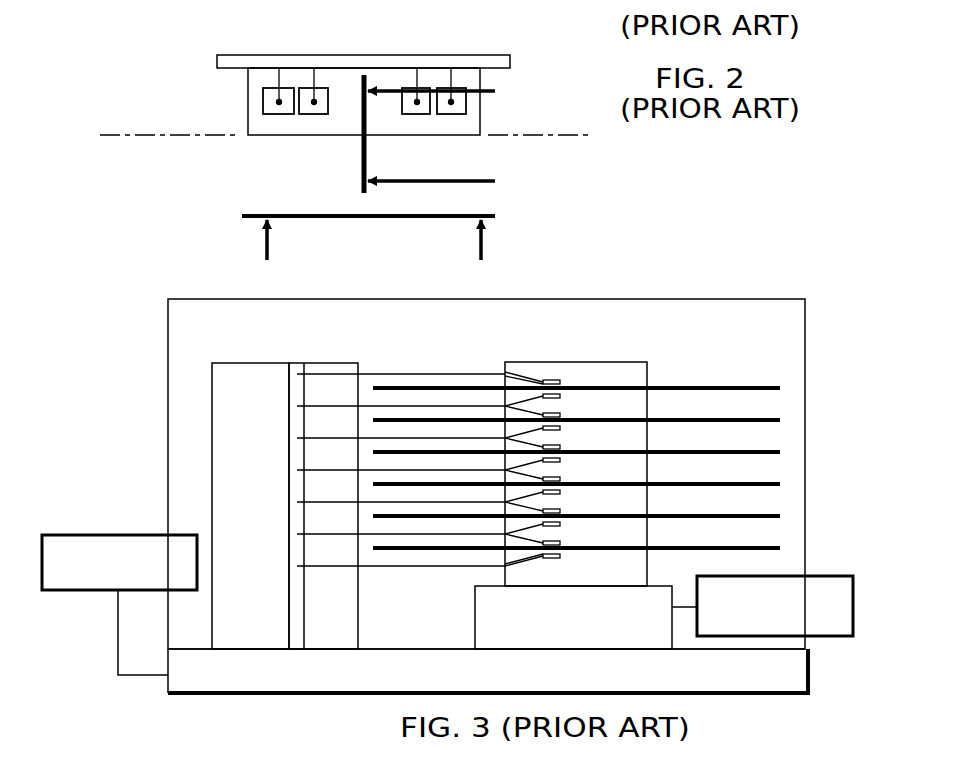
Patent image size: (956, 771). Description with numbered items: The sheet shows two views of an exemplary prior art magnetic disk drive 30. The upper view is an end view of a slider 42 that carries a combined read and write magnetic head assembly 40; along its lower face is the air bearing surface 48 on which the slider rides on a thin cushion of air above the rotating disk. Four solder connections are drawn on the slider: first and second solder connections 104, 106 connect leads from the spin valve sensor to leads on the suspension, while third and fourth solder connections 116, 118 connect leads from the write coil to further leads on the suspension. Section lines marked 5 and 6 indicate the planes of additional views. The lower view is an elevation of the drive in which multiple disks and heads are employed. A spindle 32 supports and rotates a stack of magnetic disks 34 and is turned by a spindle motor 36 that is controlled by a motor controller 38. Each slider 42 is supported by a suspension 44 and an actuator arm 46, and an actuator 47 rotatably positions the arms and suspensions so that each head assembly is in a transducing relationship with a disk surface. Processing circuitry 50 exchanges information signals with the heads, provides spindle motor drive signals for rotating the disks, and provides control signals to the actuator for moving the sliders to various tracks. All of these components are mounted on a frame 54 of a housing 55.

In FIG. 2, the first solder connection 104 is at (265, 89).
In FIG. 2, the third solder connection 116 is at (297, 89).
In FIG. 2, the fourth solder connection 118 is at (401, 89).
In FIG. 2, the second solder connection 106 is at (436, 89).
In FIG. 2, the slider 42 is at (248, 98).
In FIG. 3, the slider 42 is at (553, 410).
In FIG. 2, the magnetic head assembly 40 is at (372, 133).
In FIG. 2, the section line 6- 6 is at (444, 139).
In FIG. 2, the section line 5- 5 is at (368, 254).
In FIG. 2, the air bearing surface 48 is at (141, 137).
In FIG. 3, the housing 55 is at (656, 299).
In FIG. 3, the frame 54 is at (287, 697).
In FIG. 3, the magnetic disk drive 30 is at (702, 353).
In FIG. 3, the actuator 47 is at (318, 363).
In FIG. 3, the spindle 32 is at (627, 362).
In FIG. 3, the magnetic disk 34 is at (757, 388).
In FIG. 3, the actuator arm 46 is at (418, 374).
In FIG. 3, the suspension 44 is at (543, 398).
In FIG. 3, the spindle motor 36 is at (567, 629).
In FIG. 3, the motor controller 38 is at (840, 637).
In FIG. 3, the processing circuitry 50 is at (96, 535).